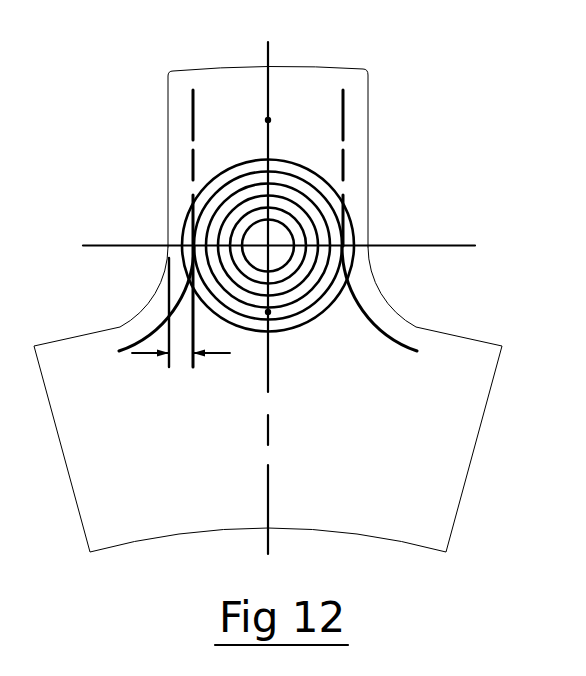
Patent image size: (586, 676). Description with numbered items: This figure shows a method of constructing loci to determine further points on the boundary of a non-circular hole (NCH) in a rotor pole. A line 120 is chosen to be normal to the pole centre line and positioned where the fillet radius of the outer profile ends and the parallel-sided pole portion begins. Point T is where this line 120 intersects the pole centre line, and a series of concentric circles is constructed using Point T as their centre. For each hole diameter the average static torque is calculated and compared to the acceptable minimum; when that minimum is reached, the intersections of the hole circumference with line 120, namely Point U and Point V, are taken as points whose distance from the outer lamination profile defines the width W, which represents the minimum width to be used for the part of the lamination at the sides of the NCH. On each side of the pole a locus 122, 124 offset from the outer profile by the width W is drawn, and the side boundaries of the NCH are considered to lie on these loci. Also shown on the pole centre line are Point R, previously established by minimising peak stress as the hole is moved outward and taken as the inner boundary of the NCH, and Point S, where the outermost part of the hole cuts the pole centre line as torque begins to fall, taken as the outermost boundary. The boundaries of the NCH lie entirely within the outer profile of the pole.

The line 120 is at (427, 242).
The locus 122 is at (191, 131).
The locus 124 is at (346, 131).
The Point S is at (277, 119).
The Point T is at (271, 243).
The Point R is at (277, 314).
The Point U is at (186, 243).
The Point V is at (351, 241).
The width W is at (181, 312).